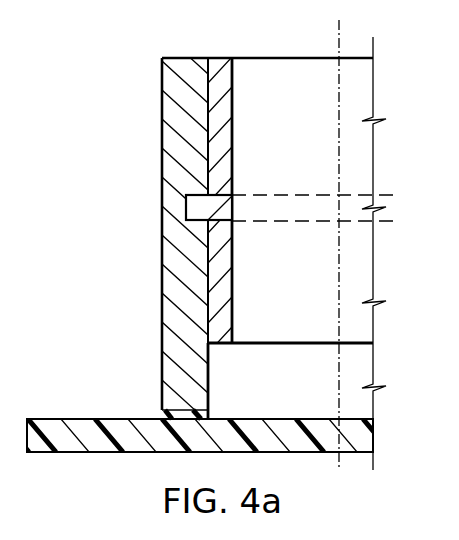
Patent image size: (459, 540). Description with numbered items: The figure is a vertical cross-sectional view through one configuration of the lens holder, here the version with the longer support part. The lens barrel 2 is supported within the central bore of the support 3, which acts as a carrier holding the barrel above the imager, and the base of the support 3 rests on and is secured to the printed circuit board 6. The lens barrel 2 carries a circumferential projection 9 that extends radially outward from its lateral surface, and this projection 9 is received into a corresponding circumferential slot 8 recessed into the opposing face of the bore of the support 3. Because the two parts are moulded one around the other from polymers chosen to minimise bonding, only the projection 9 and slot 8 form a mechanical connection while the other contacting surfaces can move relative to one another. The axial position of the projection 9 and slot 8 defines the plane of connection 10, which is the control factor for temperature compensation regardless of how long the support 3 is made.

The lens barrel 2 is at (225, 110).
The support 3 is at (170, 303).
The printed circuit board 6 is at (62, 430).
The circumferential slot 8 is at (192, 207).
The circumferential projection 9 is at (190, 195).
The plane of connection 10 is at (347, 207).